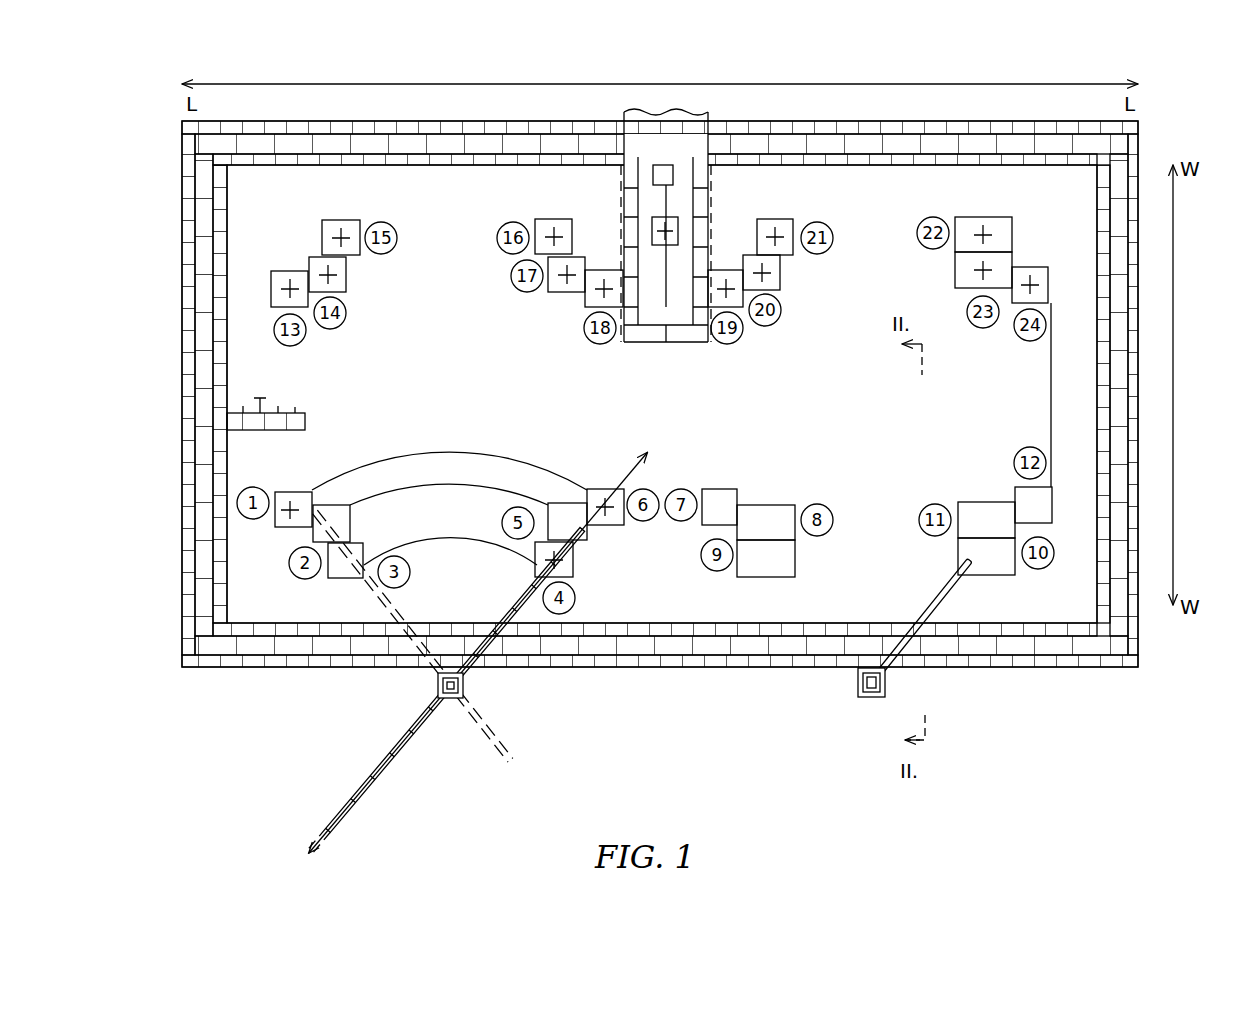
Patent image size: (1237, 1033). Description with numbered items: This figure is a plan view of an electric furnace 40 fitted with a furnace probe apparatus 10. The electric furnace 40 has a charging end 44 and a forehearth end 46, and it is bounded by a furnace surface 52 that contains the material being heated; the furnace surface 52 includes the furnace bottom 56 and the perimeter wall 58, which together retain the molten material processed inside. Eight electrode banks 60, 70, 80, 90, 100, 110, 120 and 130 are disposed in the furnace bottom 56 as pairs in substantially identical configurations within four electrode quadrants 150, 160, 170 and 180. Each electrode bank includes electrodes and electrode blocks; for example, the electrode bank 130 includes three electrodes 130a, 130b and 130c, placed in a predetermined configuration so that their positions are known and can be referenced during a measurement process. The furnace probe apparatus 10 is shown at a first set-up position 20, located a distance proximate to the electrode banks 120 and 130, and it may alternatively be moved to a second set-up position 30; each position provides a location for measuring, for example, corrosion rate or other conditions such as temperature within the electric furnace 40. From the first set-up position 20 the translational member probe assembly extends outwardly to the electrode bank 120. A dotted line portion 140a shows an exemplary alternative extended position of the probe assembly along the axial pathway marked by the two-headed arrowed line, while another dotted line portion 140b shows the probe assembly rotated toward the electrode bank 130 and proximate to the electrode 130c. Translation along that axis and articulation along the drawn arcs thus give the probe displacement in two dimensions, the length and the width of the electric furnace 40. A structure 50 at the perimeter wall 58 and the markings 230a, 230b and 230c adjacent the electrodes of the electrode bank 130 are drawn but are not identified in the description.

The furnace probe apparatus 10 is at (465, 685).
The first set-up position 20 is at (437, 690).
The second set-up position 30 is at (858, 686).
The electric furnace 40 is at (1150, 98).
The charging end 44 is at (646, 668).
The forehearth end 46 is at (458, 122).
The pillar 50 is at (808, 122).
The furnace surface 52 is at (1100, 203).
The furnace bottom 56 is at (984, 372).
The perimeter wall 58 is at (997, 165).
The electrode bank 60 is at (345, 218).
The electrode bank 70 is at (545, 218).
The electrode bank 80 is at (795, 216).
The electrode bank 90 is at (985, 216).
The electrode bank 100 is at (985, 500).
The electrode bank 110 is at (727, 487).
The electrode bank 120 is at (549, 462).
The electrode bank 130 is at (310, 486).
The electrode 130a is at (346, 578).
The electrode 130b is at (318, 540).
The electrode 130c is at (310, 514).
The dotted line portion 140a is at (582, 545).
The dotted line portion 140b is at (400, 592).
The electrode quadrant 150 is at (464, 335).
The electrode quadrant 160 is at (870, 335).
The electrode quadrant 170 is at (893, 499).
The electrode quadrant 180 is at (503, 441).
The position a 230a is at (358, 556).
The position b 230b is at (335, 522).
The position c 230c is at (290, 492).